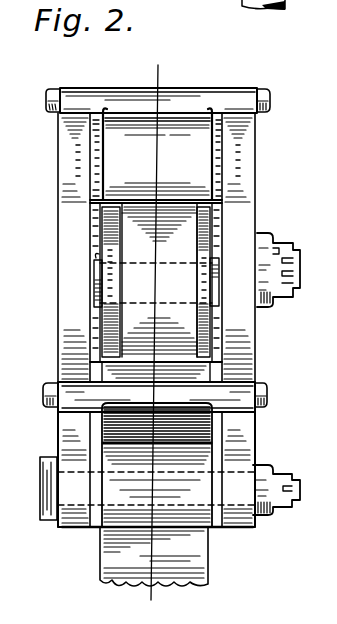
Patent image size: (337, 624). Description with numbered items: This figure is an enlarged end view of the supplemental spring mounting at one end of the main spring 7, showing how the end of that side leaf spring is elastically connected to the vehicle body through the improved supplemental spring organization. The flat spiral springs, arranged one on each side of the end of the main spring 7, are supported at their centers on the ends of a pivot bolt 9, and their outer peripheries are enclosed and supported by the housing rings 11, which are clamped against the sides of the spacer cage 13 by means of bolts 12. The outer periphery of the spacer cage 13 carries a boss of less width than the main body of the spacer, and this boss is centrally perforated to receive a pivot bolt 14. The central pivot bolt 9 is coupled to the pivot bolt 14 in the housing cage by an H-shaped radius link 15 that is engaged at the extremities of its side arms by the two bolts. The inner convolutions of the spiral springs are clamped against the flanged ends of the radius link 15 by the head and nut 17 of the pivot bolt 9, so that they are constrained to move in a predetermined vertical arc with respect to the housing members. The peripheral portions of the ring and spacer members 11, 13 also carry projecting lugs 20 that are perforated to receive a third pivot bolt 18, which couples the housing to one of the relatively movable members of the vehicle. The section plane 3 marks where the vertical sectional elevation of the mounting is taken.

The section plane 3— 3 is at (113, 65).
The main spring 7 is at (197, 565).
The pivot bolt 9 is at (300, 278).
The housing ring 11 is at (65, 155).
The bolt 12 is at (272, 95).
The spacer cage 13 is at (190, 93).
The pivot bolt 14 is at (96, 279).
The radius link 15 is at (107, 233).
The head and nut 17 is at (277, 241).
The third pivot bolt 18 is at (301, 483).
The projecting lug 20 is at (80, 528).